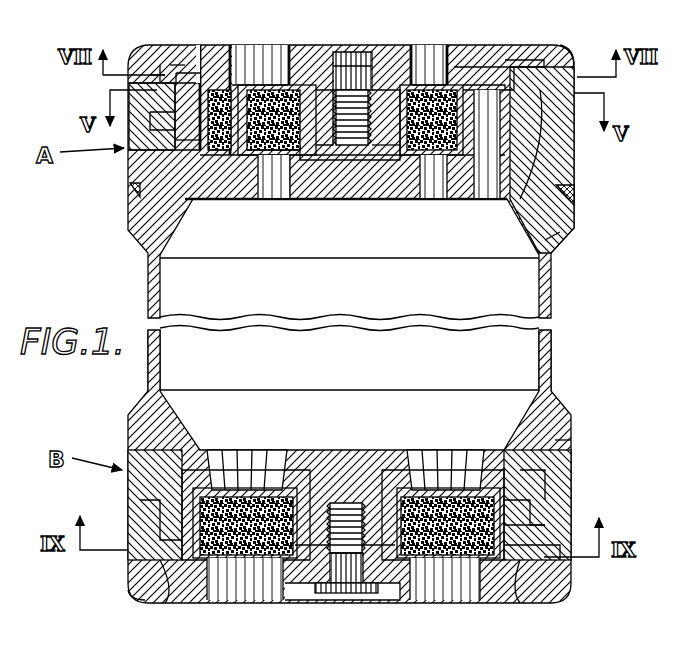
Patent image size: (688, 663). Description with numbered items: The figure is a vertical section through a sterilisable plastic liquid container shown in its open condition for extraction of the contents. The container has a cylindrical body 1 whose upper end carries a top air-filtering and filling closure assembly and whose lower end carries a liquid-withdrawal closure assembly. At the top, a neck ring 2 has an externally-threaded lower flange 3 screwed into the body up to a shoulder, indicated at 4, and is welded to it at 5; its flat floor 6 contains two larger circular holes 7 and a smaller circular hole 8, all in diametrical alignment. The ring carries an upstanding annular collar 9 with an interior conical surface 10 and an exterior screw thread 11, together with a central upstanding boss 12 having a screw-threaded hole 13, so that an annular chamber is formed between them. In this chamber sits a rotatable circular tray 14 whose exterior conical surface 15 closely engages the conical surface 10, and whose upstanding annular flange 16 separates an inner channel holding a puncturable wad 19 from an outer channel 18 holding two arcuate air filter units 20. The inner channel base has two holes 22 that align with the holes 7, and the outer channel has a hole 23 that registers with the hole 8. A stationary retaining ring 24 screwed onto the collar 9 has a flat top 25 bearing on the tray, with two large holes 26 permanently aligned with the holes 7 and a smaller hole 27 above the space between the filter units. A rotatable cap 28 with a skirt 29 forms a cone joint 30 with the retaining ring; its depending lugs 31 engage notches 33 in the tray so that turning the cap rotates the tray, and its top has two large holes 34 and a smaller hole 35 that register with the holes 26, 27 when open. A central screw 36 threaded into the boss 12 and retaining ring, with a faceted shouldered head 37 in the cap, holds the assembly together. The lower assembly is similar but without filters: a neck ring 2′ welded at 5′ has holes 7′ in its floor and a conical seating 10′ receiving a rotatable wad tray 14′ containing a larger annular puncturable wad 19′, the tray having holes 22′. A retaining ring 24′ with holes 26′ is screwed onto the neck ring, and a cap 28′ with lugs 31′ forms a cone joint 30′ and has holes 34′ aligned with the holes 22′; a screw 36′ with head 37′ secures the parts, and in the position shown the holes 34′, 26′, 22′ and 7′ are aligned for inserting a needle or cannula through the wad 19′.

The cylindrical body 1 is at (153, 300).
The neck ring 2 is at (566, 188).
The externally-threaded lower flange 3 is at (545, 230).
The seal ring 4 is at (566, 195).
The weld 5 is at (140, 205).
The flat floor 6 is at (240, 150).
The larger circular holes 7 is at (268, 185).
The smaller circular hole 8 is at (487, 160).
The upstanding annular collar 9 is at (540, 160).
The interior conical surface 10 is at (545, 150).
The screw thread 11 is at (545, 135).
The central upstanding boss 12 is at (370, 160).
The screw-threaded hole 13 is at (330, 150).
The rotatable circular tray 14 is at (185, 150).
The exterior conical surface 15 is at (137, 186).
The upstanding annular flange 16 is at (225, 152).
The outer channel 18 is at (545, 60).
The puncturable wad 19 is at (252, 152).
The air filter units 20 is at (215, 150).
The holes 22 is at (275, 170).
The hole 23 is at (478, 152).
The stationary retaining ring 24 is at (165, 72).
The flat top 25 is at (510, 60).
The large holes 26 is at (300, 65).
The smaller hole 27 is at (232, 62).
The rotatable cap 28 is at (570, 55).
The skirt 29 is at (155, 92).
The cone joint 30 is at (160, 80).
The depending lugs 31 is at (170, 70).
The notches 33 is at (185, 50).
The large holes 34 is at (260, 70).
The smaller hole 35 is at (203, 65).
The central screw 36 is at (385, 60).
The head 37 is at (352, 60).
The neck ring 2′ is at (530, 432).
The weld 5′ is at (555, 447).
The holes 7′ is at (262, 470).
The conical seating 10′ is at (520, 478).
The rotatable wad tray 14′ is at (510, 505).
The annular puncturable wad 19′ is at (520, 522).
The holes 22′ is at (240, 480).
The retaining ring 24′ is at (555, 568).
The holes 26′ is at (270, 578).
The cap 28′ is at (150, 596).
The cone joint 30′ is at (140, 540).
The lugs 31′ is at (520, 565).
The holes 34′ is at (245, 590).
The screw 36′ is at (355, 560).
The head 37′ is at (345, 590).